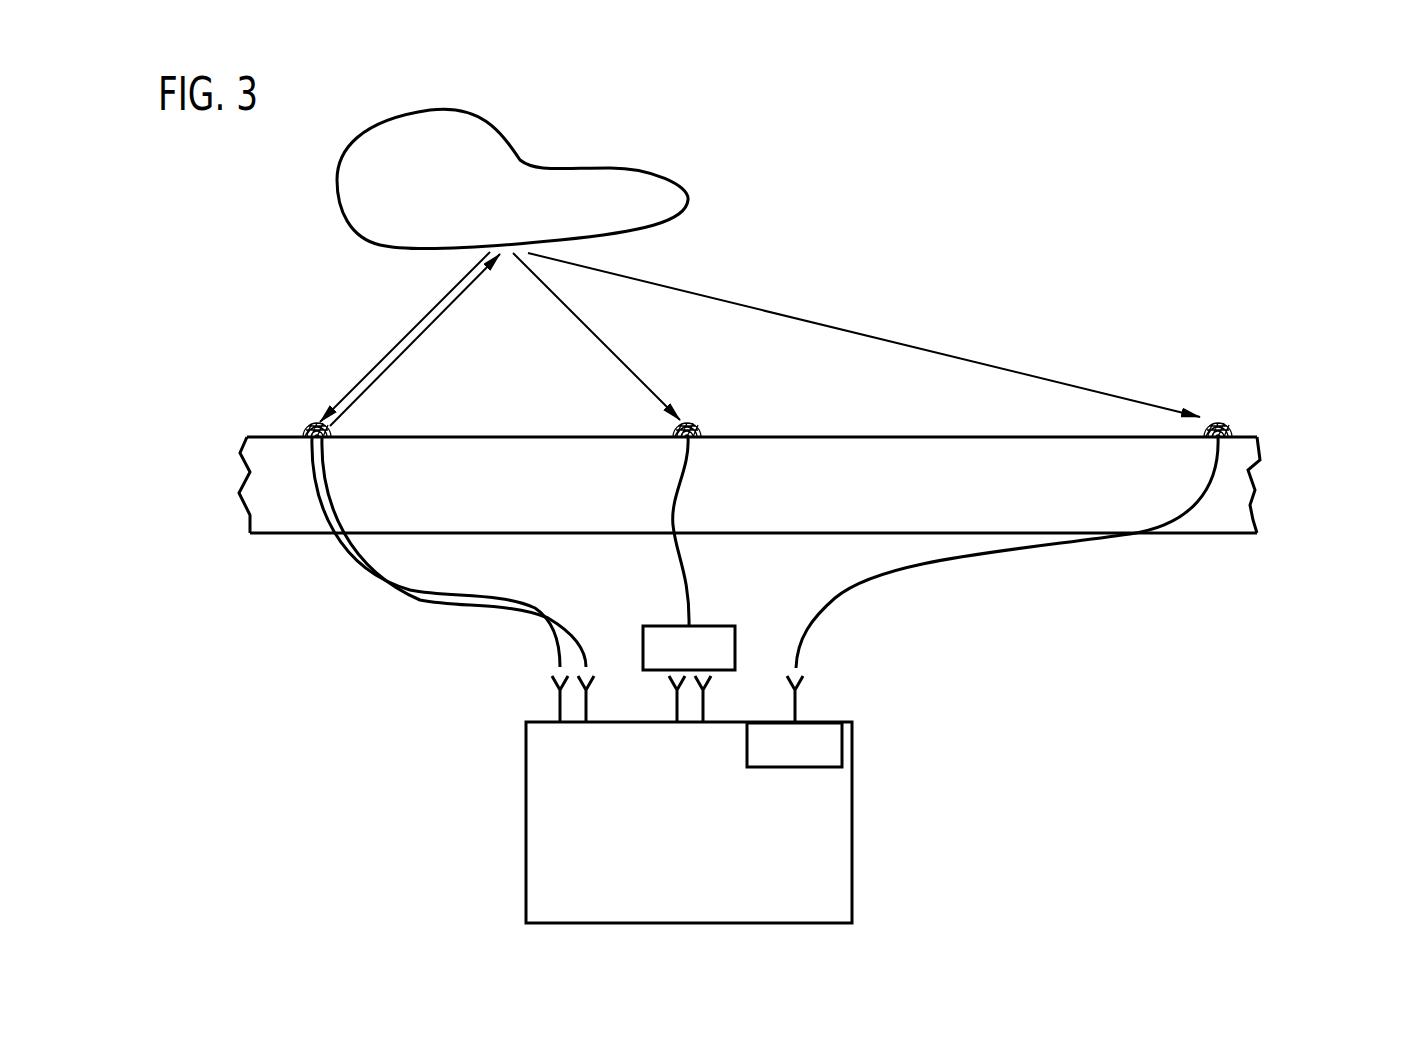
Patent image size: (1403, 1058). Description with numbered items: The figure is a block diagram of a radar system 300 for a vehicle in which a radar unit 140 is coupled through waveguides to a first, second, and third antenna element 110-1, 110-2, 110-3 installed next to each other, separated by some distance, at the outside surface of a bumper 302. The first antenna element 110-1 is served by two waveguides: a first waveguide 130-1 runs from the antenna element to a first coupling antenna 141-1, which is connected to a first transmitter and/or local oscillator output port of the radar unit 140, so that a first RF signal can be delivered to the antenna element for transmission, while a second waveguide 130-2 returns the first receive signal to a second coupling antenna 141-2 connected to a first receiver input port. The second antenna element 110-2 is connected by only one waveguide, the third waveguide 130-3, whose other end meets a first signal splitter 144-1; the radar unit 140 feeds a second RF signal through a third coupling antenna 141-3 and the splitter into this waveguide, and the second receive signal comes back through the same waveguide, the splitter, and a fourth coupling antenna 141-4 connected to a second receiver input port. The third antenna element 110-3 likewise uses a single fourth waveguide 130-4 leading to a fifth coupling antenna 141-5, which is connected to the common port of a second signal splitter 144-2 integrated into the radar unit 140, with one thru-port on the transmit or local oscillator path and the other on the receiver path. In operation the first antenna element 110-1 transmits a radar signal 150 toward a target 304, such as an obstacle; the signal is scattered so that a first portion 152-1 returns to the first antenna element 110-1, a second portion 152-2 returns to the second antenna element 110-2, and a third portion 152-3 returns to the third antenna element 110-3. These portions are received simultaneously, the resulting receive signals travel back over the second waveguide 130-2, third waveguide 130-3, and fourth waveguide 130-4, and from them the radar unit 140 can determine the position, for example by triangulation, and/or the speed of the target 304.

The radar system 300 is at (1002, 218).
The target 304 is at (337, 186).
The bumper 302 is at (243, 485).
The first antenna element 110-1 is at (302, 432).
The second antenna element 110-2 is at (672, 432).
The third antenna element 110-3 is at (1238, 434).
The radar signal 150 is at (412, 345).
The first portion of the radar signal 152-1 is at (405, 336).
The second portion of the radar signal 152-2 is at (604, 343).
The third portion of the radar signal 152-3 is at (875, 338).
The first waveguide 130-1 is at (508, 604).
The second waveguide 130-2 is at (405, 590).
The third waveguide 130-3 is at (676, 556).
The fourth waveguide 130-4 is at (966, 556).
The first coupling antenna 141-1 is at (584, 706).
The second coupling antenna 141-2 is at (557, 706).
The antenna 141-3 is at (704, 708).
The fourth coupling antenna 141-4 is at (672, 706).
The fifth coupling antenna 141-5 is at (800, 708).
The first signal splitter 144-1 is at (643, 646).
The second signal splitter 144-2 is at (843, 742).
The radar unit 140 is at (853, 828).